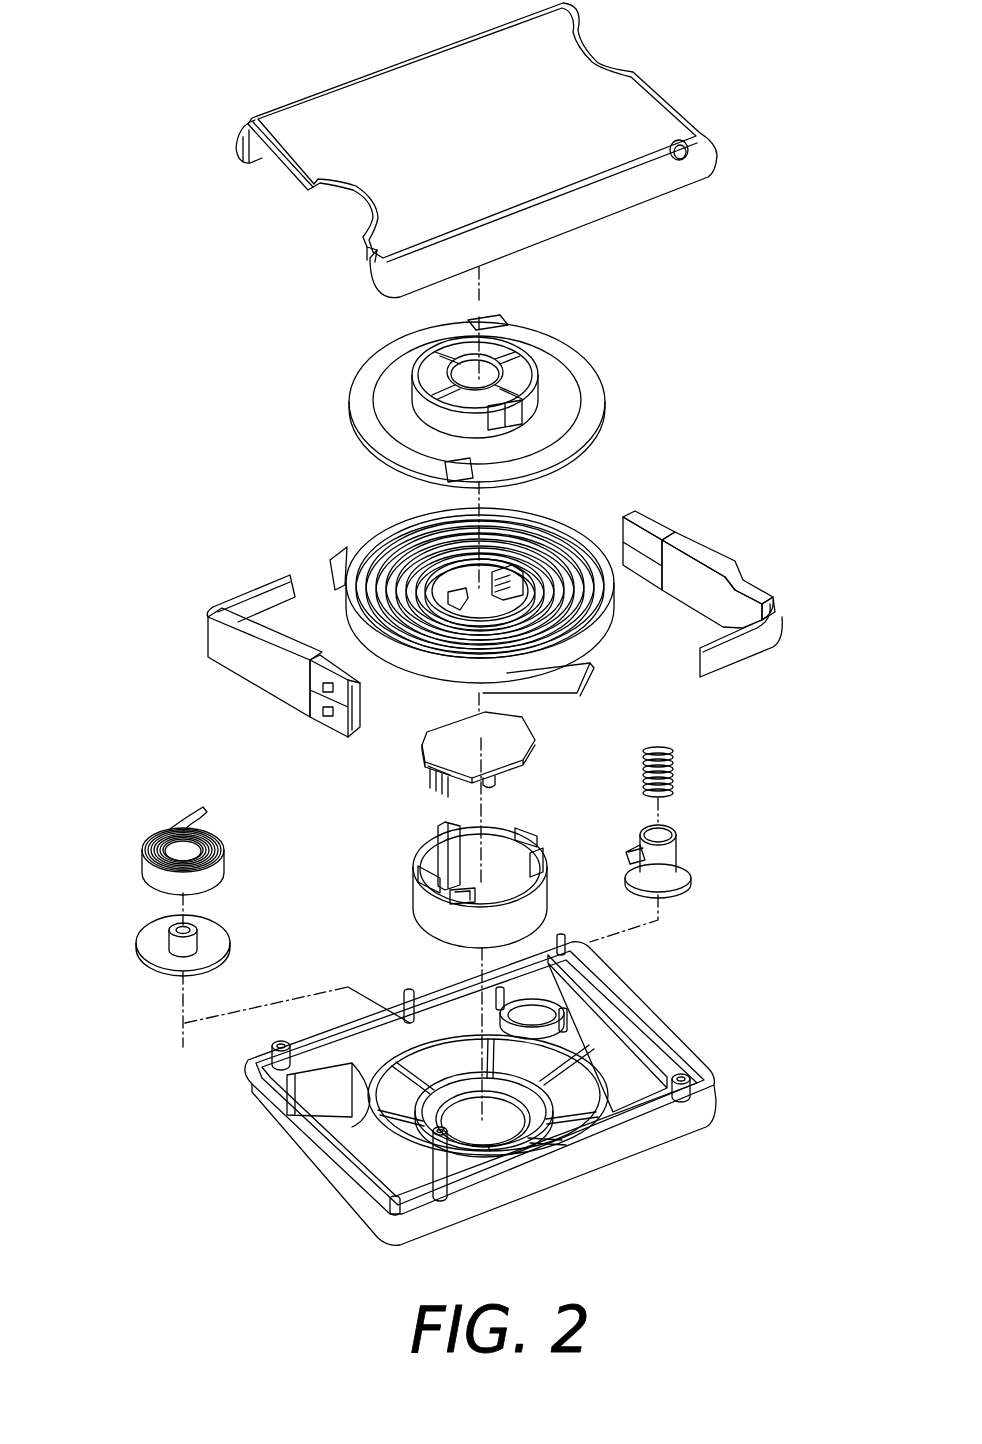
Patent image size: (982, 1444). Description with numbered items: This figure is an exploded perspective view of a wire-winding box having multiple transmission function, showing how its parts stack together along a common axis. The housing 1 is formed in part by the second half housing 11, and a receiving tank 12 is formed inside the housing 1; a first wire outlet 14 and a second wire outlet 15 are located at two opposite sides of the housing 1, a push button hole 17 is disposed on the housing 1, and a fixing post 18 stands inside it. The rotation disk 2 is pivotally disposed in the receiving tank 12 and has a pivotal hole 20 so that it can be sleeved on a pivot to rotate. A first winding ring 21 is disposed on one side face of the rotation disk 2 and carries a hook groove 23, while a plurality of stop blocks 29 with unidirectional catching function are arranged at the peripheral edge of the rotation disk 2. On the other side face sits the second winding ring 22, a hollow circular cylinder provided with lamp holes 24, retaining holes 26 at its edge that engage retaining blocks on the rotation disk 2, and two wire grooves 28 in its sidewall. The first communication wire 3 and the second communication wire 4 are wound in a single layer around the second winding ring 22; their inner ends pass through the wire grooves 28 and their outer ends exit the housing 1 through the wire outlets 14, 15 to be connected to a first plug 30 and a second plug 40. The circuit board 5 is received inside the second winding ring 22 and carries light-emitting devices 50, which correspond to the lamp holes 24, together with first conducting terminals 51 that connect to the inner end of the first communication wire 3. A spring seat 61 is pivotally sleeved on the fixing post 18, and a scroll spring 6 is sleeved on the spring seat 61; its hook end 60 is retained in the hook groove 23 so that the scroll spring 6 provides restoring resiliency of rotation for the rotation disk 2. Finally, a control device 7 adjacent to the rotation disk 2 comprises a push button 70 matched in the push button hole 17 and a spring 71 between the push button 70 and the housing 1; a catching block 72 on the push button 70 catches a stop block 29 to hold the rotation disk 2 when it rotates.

The housing 1 is at (465, 1085).
The second half housing 11 is at (678, 102).
The receiving tank 12 is at (420, 1027).
The first wire outlet 14 is at (265, 1060).
The second wire outlet 15 is at (690, 1080).
The push button hole 17 is at (537, 1020).
The fixing post 18 is at (455, 1150).
The rotation disk 2 is at (480, 406).
The pivotal hole 20 is at (505, 381).
The first winding ring 21 is at (412, 400).
The hook groove 23 is at (513, 413).
The stop blocks 29 is at (440, 470).
The first communication wire 3 is at (333, 562).
The first plug 30 is at (255, 670).
The second communication wire 4 is at (587, 677).
The second plug 40 is at (682, 543).
The circuit board 5 is at (469, 746).
The light-emitting devices 50 is at (493, 775).
The first conducting terminals 51 is at (427, 767).
The second winding ring 22 is at (467, 867).
The lamp holes 24 is at (527, 895).
The retaining holes 26 is at (440, 827).
The wire grooves 28 is at (420, 875).
The scroll spring 6 is at (156, 816).
The hook end 60 is at (200, 810).
The spring seat 61 is at (162, 948).
The control device 7 is at (714, 846).
The push button 70 is at (678, 893).
The spring 71 is at (675, 773).
The catching block 72 is at (633, 857).